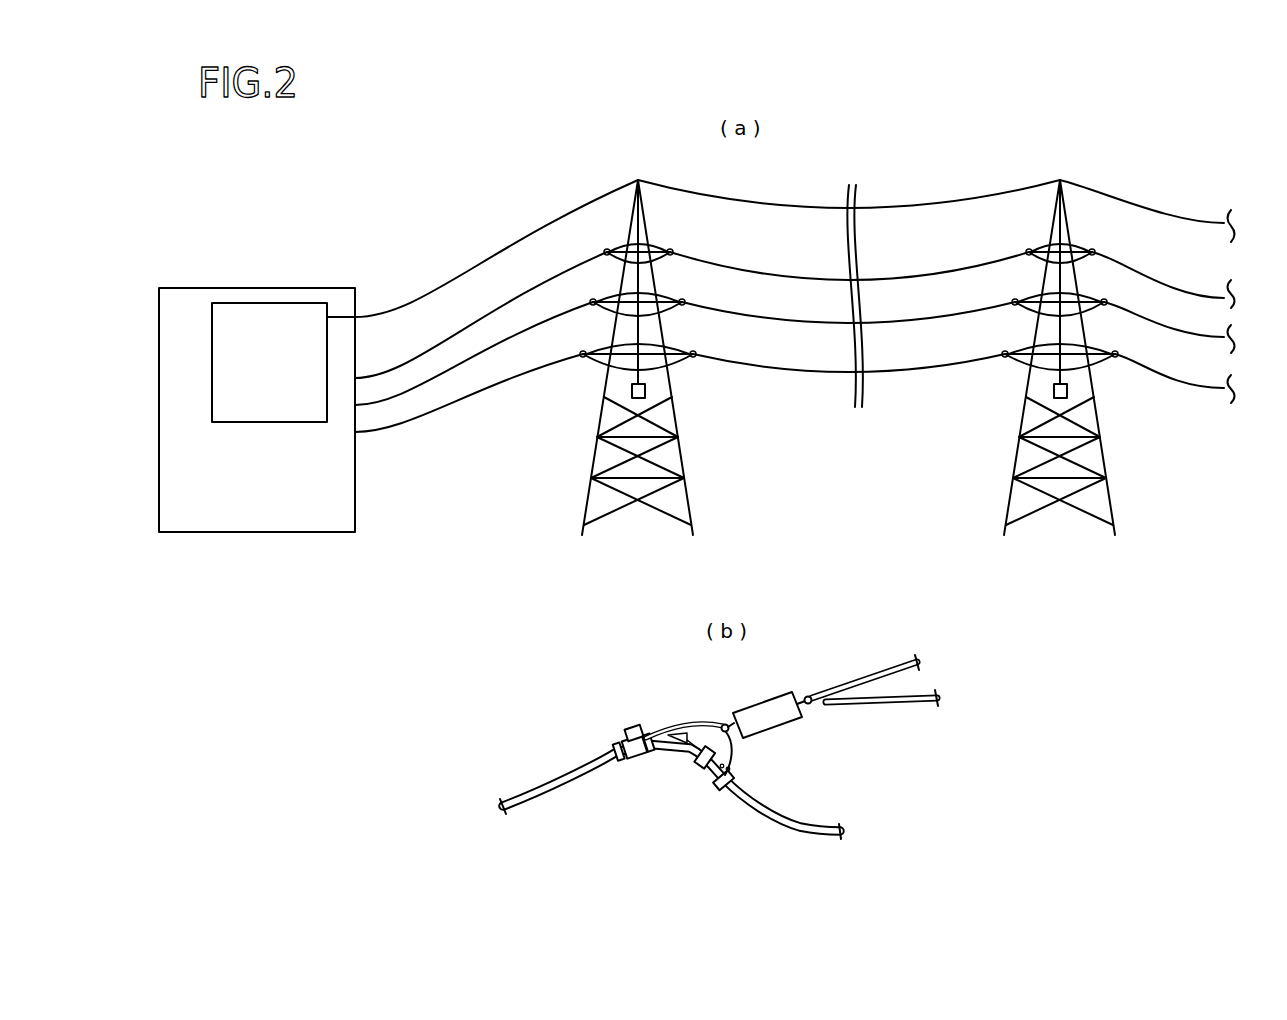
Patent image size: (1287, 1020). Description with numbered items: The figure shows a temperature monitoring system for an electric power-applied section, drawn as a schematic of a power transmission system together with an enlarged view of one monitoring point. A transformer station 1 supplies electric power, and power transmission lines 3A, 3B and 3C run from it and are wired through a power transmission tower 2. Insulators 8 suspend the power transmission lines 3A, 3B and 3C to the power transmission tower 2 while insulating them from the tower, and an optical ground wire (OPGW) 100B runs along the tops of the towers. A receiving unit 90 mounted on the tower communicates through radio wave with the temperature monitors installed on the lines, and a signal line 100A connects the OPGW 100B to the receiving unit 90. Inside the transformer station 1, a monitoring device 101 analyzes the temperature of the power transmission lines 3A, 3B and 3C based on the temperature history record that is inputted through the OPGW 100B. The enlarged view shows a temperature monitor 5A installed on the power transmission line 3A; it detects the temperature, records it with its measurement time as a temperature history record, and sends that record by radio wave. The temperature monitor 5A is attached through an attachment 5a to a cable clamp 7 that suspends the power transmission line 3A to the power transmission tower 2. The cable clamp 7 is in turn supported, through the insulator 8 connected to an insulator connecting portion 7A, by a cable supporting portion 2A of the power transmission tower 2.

The transformer station 1 is at (207, 288).
The monitoring device 101 is at (278, 303).
The optical ground wire (OPGW) 100B is at (455, 266).
The power transmission line 3A is at (463, 334).
The power transmission line 3B is at (453, 378).
The power transmission line 3C is at (458, 416).
The power transmission tower 2 is at (592, 453).
The cable supporting portion 2A is at (810, 697).
The insulator 8 is at (594, 248).
The receiving unit 90 is at (645, 392).
The signal line 100A is at (641, 333).
The temperature monitor 5A is at (632, 728).
The attachment 5a is at (625, 760).
The cable clamp 7 is at (680, 724).
The insulator connecting portion 7A is at (727, 725).